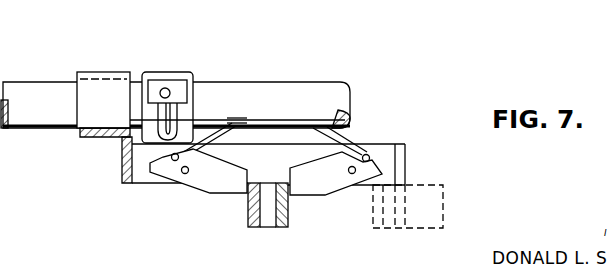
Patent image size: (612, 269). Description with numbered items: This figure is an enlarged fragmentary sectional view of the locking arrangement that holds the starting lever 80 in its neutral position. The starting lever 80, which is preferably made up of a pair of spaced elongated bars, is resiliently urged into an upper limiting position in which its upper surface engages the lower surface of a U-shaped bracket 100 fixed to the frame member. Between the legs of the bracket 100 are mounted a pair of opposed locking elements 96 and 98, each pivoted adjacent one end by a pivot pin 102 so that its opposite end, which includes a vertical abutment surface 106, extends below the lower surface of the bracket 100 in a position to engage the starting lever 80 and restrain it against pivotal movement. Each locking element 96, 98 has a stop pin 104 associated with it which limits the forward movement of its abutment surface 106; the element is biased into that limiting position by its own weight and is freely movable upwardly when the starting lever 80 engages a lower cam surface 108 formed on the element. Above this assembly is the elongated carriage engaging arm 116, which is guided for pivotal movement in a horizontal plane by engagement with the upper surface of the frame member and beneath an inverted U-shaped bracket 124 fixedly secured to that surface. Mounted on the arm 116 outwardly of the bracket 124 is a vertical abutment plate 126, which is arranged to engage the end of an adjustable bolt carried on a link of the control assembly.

The starting lever 80 is at (252, 222).
The locking element 96 is at (228, 185).
The locking element 98 is at (318, 188).
The U-shaped bracket 100 is at (390, 155).
The pivot pin 102 is at (172, 180).
The stop pin 104 is at (307, 123).
The vertical abutment surface 106 is at (290, 181).
The lower cam surface 108 is at (197, 192).
The carriage engaging arm 116 is at (262, 95).
The inverted U-shaped bracket 124 is at (97, 75).
The vertical abutment plate 126 is at (162, 73).